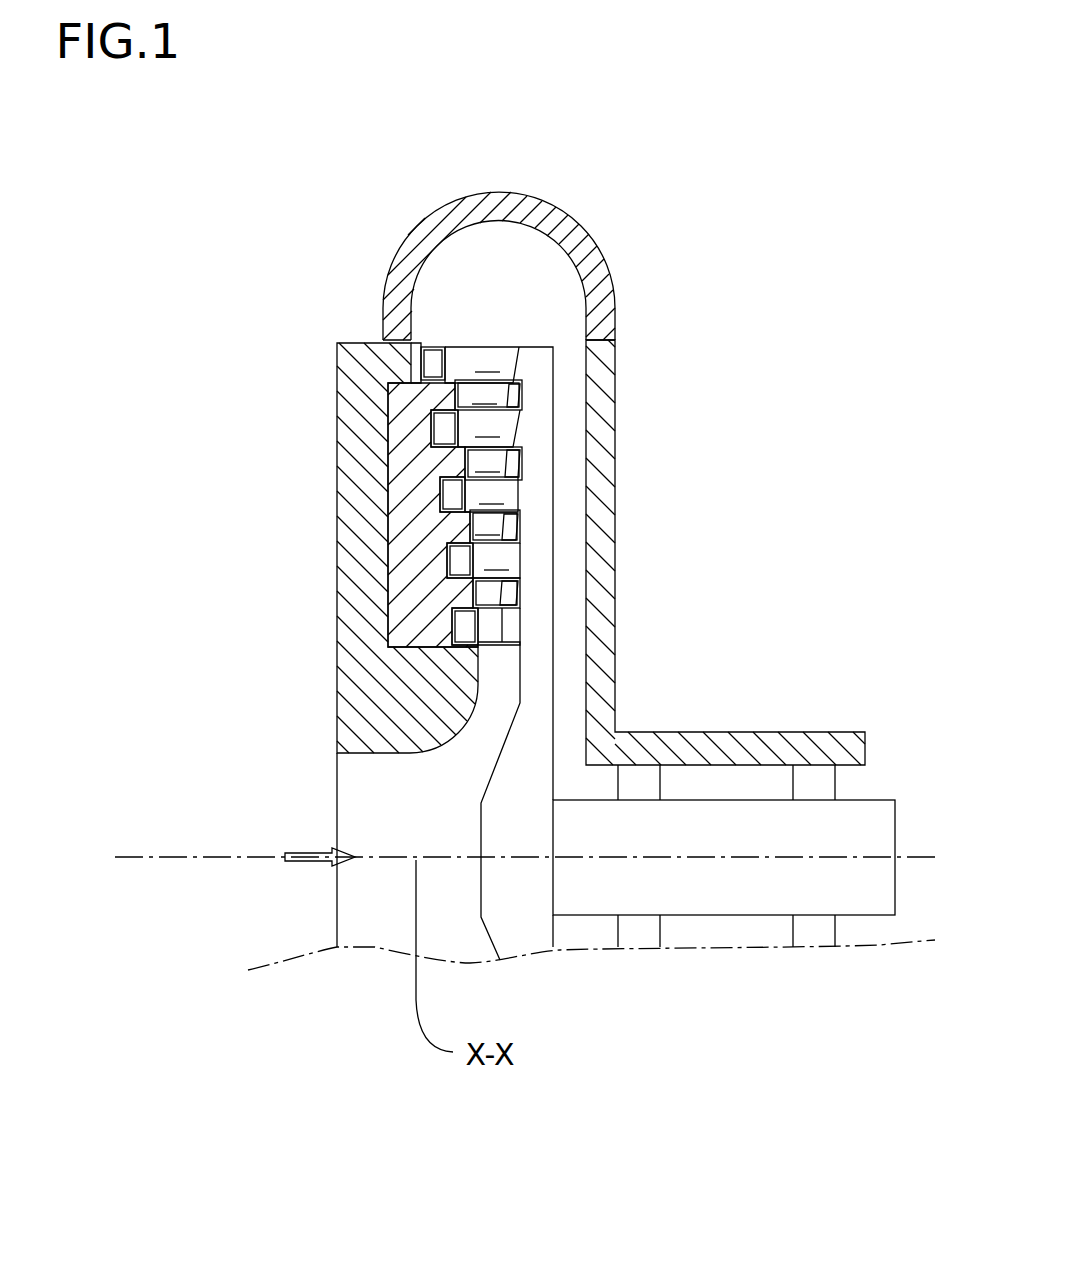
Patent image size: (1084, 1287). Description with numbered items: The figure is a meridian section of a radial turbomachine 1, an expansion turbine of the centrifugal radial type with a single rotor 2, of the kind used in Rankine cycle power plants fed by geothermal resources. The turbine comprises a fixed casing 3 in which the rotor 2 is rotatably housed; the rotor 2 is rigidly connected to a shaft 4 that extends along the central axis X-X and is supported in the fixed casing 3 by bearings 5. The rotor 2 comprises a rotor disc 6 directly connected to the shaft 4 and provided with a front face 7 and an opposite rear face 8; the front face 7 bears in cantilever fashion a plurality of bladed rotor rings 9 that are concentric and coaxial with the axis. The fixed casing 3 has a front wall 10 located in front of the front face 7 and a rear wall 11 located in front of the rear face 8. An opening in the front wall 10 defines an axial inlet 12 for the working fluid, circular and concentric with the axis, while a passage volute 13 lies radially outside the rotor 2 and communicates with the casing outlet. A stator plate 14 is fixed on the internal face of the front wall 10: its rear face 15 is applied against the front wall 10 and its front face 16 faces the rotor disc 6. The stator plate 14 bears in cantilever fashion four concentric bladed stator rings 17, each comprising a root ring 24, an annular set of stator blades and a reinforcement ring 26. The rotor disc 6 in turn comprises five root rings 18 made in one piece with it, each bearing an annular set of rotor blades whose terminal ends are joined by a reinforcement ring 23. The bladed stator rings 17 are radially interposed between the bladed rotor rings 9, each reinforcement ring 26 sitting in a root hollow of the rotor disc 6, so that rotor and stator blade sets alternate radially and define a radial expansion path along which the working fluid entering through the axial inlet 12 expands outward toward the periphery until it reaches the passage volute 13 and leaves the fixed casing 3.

The radial turbomachine 1 is at (345, 1043).
The rotor 2 is at (555, 524).
The fixed casing 3 is at (630, 268).
The shaft 4 is at (745, 930).
The bearings 5 is at (628, 787).
The rotor disc 6 is at (520, 622).
The front face 7 is at (360, 745).
The rear face 8 is at (547, 600).
The bladed rotor rings 9 is at (528, 342).
The front wall 10 is at (410, 418).
The rear wall 11 is at (535, 380).
The axial inlet 12 is at (382, 772).
The passage volute 13 is at (512, 287).
The stator plate 14 is at (520, 668).
The rear face 15 is at (400, 500).
The front face 16 is at (415, 340).
The bladed stator rings 17 is at (472, 388).
The root rings 18 is at (540, 362).
The reinforcement ring 23 is at (428, 342).
The root ring 24 is at (445, 365).
The reinforcement ring 26 is at (513, 398).